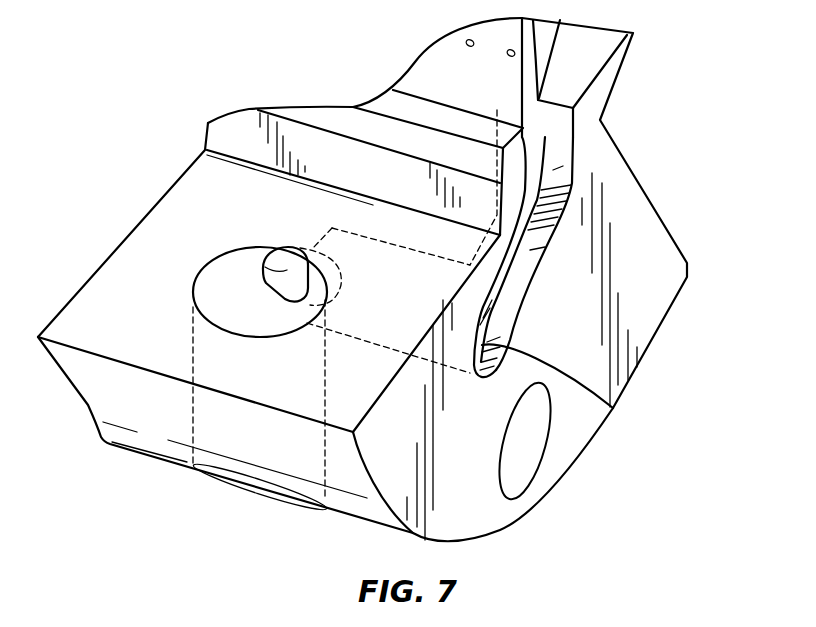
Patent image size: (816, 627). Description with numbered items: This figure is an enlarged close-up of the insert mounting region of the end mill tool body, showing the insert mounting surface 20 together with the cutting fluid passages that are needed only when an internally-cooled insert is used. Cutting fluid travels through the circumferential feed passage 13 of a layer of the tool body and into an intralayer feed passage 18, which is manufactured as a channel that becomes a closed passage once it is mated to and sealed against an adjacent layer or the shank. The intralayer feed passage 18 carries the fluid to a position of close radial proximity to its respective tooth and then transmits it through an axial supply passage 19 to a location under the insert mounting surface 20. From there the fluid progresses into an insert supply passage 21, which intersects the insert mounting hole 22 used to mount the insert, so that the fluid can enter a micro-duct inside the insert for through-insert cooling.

The circumferential feed passage 13 is at (560, 72).
The intralayer feed passage 18 is at (530, 193).
The axial supply passage 19 is at (598, 397).
The insert mounting surface 20 is at (108, 312).
The insert supply passage 21 is at (258, 262).
The insert mounting hole 22 is at (208, 311).